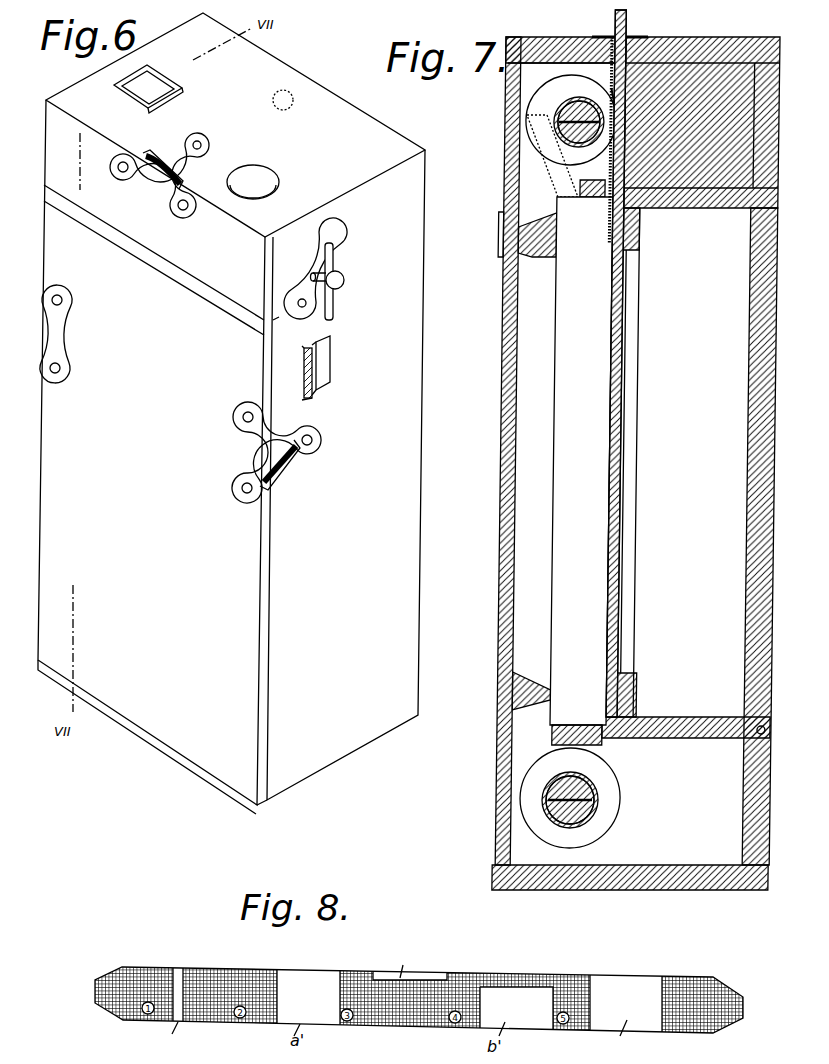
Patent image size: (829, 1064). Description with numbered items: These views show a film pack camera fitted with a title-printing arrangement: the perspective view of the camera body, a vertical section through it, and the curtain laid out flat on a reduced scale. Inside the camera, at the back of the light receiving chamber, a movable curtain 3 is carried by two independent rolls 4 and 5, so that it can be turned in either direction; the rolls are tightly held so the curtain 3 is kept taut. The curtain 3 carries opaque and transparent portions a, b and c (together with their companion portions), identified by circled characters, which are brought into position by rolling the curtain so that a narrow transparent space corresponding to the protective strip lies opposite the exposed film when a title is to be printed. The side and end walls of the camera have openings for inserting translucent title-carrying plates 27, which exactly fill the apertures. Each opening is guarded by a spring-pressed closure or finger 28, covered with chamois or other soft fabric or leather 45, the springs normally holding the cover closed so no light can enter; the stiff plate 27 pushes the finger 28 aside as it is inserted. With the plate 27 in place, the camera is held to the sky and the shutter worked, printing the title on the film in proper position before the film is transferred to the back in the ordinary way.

In FIG. 7, the movable curtain 3 is at (612, 461).
In FIG. 7, the roll 4 is at (566, 108).
In FIG. 7, the roll 5 is at (585, 805).
In FIG. 7, the translucent sheet or plate 27 is at (628, 25).
In FIG. 7, the spring-pressed closure 28 is at (612, 96).
In FIG. 6, the soft fabric or leather covering 45 is at (304, 375).
In FIG. 7, the soft fabric or leather covering 45 is at (615, 129).
In FIG. 8, the curtain portion a is at (177, 1036).
In FIG. 8, the curtain portion b is at (405, 963).
In FIG. 8, the curtain portion c is at (617, 1038).